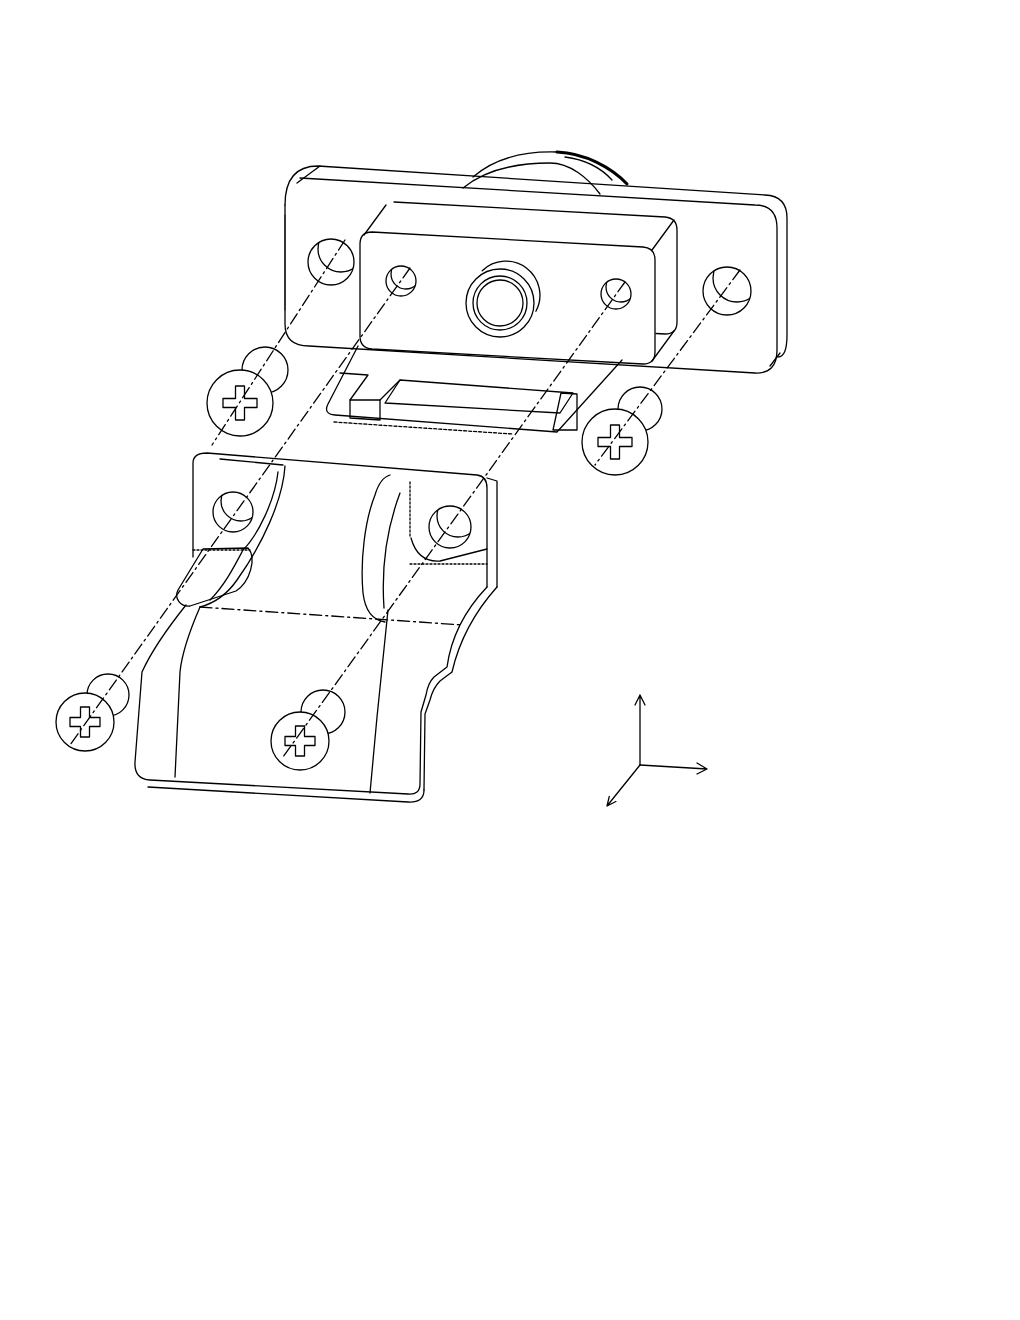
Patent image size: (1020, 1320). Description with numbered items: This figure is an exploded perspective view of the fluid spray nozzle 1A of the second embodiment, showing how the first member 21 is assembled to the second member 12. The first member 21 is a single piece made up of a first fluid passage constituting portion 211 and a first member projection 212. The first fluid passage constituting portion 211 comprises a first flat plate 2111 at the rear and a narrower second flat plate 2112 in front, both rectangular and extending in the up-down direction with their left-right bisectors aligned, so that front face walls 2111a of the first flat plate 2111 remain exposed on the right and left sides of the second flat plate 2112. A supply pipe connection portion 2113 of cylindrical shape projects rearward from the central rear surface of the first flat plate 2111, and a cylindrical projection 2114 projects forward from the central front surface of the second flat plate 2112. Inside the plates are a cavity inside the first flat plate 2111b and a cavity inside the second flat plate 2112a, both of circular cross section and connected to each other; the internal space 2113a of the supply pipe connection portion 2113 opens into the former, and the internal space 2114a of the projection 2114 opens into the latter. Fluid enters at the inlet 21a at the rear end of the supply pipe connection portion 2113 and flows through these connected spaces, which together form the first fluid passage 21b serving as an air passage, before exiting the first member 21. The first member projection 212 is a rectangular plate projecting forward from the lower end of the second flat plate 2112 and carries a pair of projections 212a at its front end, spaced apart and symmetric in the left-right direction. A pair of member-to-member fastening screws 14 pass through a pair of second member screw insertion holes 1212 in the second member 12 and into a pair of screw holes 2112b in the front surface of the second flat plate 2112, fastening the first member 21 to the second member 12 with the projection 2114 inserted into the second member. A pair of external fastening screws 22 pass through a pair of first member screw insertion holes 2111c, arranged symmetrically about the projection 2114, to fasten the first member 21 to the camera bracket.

The fluid spray nozzle 1A is at (96, 245).
The first member 21 is at (253, 186).
The first fluid passage constituting portion 211 is at (777, 187).
The first flat plate 2111 is at (723, 200).
The front face walls 2111a is at (312, 221).
The cavity inside the first flat plate 2111b is at (547, 207).
The first member screw insertion holes 2111c is at (311, 265).
The second flat plate 2112 is at (427, 218).
The cavity inside the second flat plate 2112a is at (612, 302).
The screw holes 2112b is at (392, 268).
The supply pipe connection portion 2113 is at (577, 148).
The internal space of the supply pipe connection portion 2113a is at (612, 162).
The projection 2114 is at (478, 272).
The internal space of the projection 2114a is at (508, 322).
The inlet 21a is at (600, 180).
The first fluid passage 21b is at (500, 212).
The first member projection 212 is at (393, 362).
The projections 212a is at (556, 416).
The external fastening screws 22 is at (213, 398).
The second member 12 is at (167, 595).
The second member screw insertion holes 1212 is at (212, 512).
The member-to-member fastening screws 14 is at (290, 762).